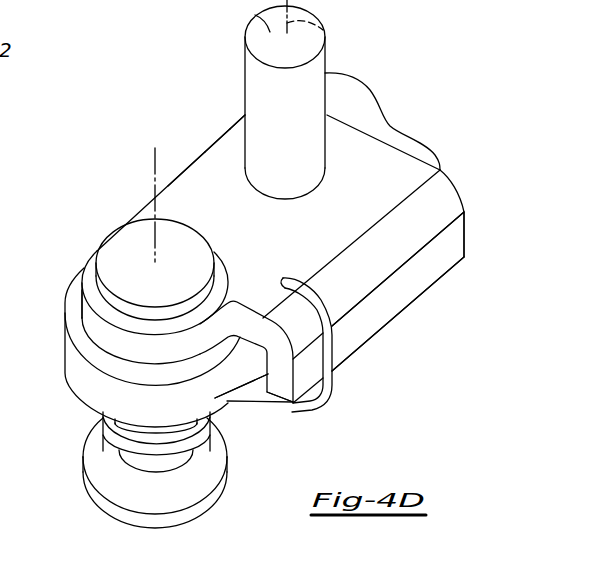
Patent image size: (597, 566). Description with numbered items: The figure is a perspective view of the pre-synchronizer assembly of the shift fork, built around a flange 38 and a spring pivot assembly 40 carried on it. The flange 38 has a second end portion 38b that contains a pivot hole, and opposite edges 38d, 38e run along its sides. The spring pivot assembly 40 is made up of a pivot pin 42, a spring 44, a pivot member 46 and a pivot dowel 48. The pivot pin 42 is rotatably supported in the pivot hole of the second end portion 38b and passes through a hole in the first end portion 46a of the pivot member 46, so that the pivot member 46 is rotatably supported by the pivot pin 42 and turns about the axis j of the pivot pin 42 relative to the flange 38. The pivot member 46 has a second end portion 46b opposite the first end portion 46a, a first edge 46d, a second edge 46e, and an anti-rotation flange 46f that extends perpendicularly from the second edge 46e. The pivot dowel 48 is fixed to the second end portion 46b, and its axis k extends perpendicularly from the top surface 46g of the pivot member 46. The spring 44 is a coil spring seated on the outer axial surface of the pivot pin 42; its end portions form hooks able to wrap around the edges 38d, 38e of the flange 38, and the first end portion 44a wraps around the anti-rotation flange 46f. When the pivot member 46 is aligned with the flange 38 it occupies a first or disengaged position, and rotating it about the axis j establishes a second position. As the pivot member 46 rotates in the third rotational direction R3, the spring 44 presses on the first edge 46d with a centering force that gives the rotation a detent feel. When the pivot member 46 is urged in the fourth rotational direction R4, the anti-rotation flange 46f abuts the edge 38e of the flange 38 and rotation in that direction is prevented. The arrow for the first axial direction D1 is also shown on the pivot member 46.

The flange 38 is at (159, 346).
The second end portion 38b is at (92, 387).
The edge 38d is at (80, 280).
The edge 38e is at (258, 360).
The spring pivot assembly 40 is at (158, 101).
The pivot pin 42 is at (188, 240).
The spring 44 is at (108, 452).
The first end portion 44a is at (334, 345).
The pivot member 46 is at (446, 182).
The first end portion 46a is at (88, 332).
The second end portion 46b is at (240, 116).
The first edge 46d is at (192, 158).
The second edge 46e is at (403, 250).
The anti-rotation flange 46f is at (278, 380).
The top surface 46g is at (226, 152).
The pivot dowel 48 is at (255, 15).
The axis k is at (323, 30).
The axis j is at (150, 160).
The first axial direction D1 is at (395, 97).
The third rotational direction R3 is at (217, 528).
The fourth rotational direction R4 is at (227, 517).